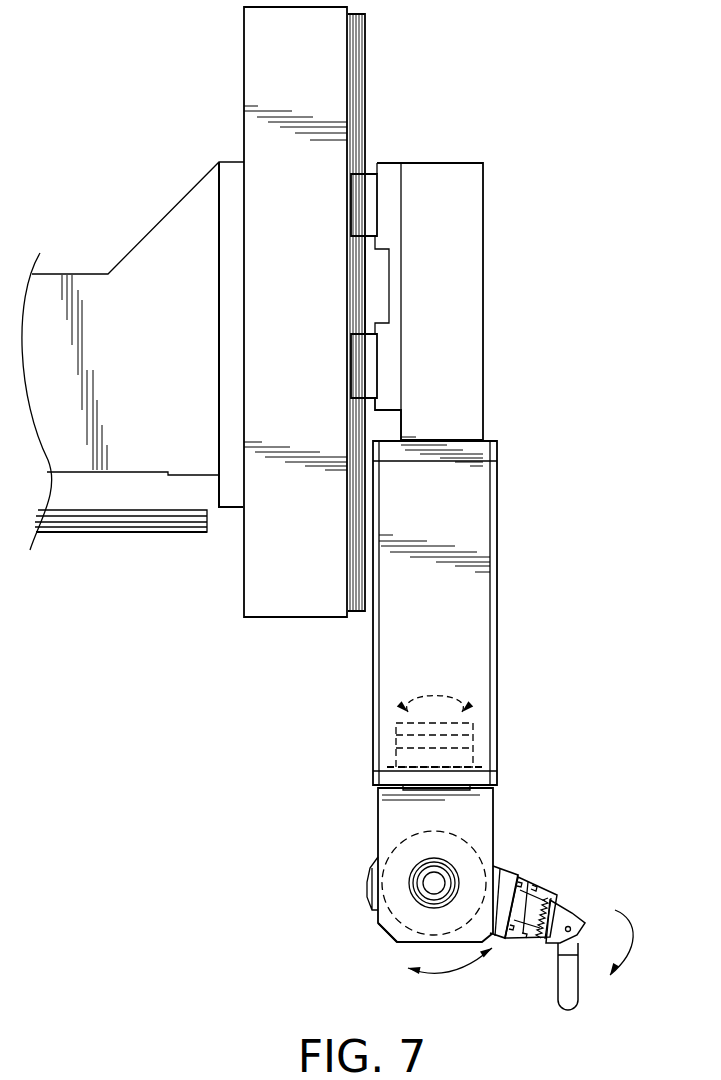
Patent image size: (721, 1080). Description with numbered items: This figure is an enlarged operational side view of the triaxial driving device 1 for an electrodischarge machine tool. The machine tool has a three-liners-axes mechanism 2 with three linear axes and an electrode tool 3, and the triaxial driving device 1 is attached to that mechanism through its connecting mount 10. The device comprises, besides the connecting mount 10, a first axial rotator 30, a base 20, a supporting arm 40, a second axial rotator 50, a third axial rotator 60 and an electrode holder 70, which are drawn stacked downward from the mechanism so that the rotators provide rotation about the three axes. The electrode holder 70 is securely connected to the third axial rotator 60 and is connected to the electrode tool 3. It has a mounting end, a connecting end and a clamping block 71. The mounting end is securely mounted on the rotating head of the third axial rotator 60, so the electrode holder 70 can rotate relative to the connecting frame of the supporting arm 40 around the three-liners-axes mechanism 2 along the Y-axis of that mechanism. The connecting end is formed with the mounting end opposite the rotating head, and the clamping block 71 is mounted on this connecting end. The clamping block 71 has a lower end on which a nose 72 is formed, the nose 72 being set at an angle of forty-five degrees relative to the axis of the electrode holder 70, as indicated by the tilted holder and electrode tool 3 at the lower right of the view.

The triaxial driving device 1 is at (543, 483).
The three-liners-axes mechanism 2 is at (378, 103).
The electrode tool 3 is at (587, 978).
The connecting mount 10 is at (505, 707).
The base 20 is at (377, 815).
The first axial rotator 30 is at (397, 730).
The supporting arm 40 is at (368, 897).
The second axial rotator 50 is at (382, 927).
The third axial rotator 60 is at (493, 862).
The electrode holder 70 is at (590, 917).
The clamping block 71 is at (573, 912).
The nose 72 is at (572, 908).